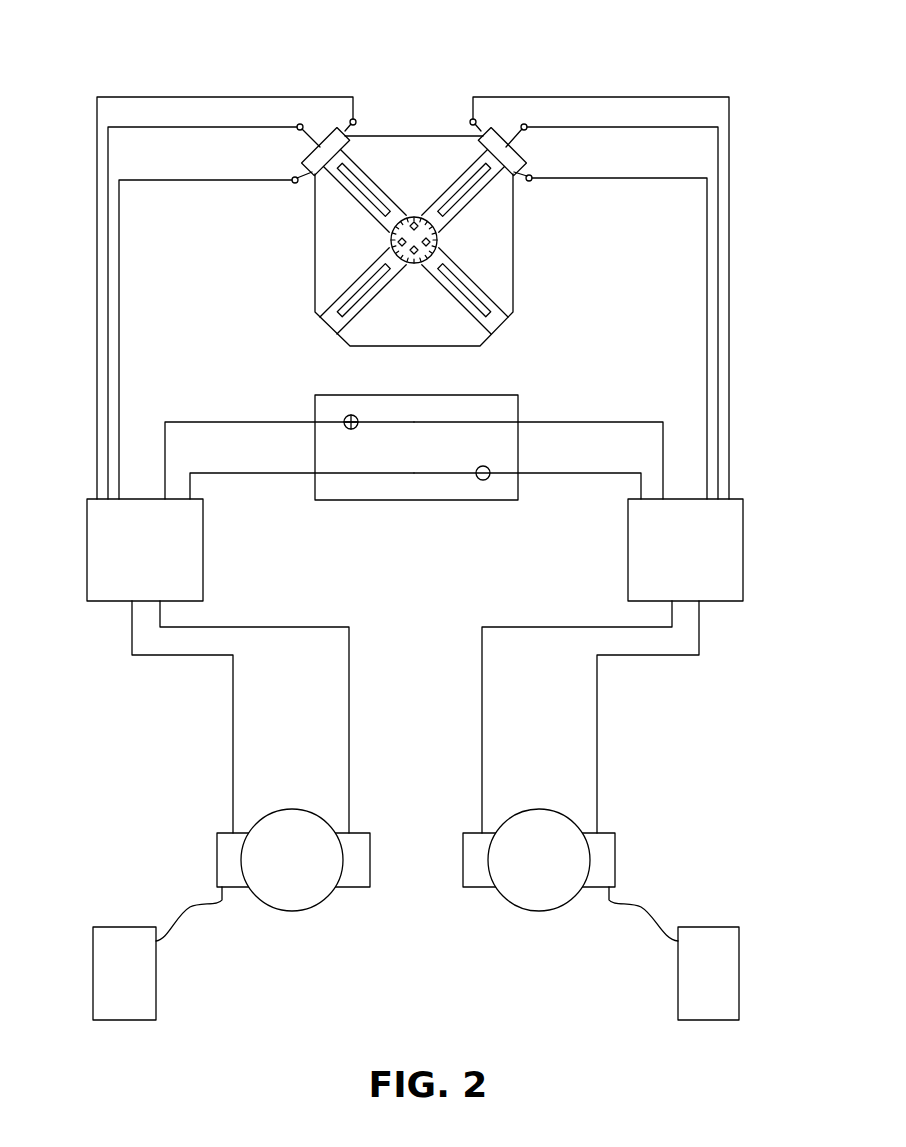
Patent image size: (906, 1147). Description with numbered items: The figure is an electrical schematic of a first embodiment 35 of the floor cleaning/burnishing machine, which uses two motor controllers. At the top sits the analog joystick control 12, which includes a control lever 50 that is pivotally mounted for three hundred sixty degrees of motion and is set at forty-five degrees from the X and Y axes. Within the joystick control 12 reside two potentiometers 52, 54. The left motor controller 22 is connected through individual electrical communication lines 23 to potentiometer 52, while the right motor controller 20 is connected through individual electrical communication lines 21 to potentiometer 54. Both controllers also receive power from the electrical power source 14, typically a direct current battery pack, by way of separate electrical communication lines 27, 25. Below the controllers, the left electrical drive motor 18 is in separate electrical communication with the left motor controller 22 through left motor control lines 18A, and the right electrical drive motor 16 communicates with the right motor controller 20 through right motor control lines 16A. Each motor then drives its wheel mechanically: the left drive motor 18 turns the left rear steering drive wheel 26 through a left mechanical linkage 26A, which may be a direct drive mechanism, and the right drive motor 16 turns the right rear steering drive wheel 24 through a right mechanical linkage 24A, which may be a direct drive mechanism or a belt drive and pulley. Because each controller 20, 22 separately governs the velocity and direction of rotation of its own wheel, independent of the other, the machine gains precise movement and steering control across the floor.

The first embodiment 35 is at (462, 69).
The analog joystick control 12 is at (513, 282).
The control lever 50 is at (437, 238).
The potentiometer 52 is at (310, 150).
The potentiometer 54 is at (525, 150).
The electrical communication lines 23 is at (97, 347).
The electrical communication lines 21 is at (729, 347).
The electrical communication lines 27 is at (225, 472).
The electrical communication lines 25 is at (608, 472).
The electrical power source 14 is at (415, 500).
The left motor controller 22 is at (203, 548).
The right motor controller 20 is at (628, 548).
The left motor control lines 18A is at (132, 637).
The right motor control lines 16A is at (699, 637).
The left electrical drive motor 18 is at (292, 911).
The right electrical drive motor 16 is at (539, 911).
The left rear steering drive wheel 26 is at (122, 927).
The right rear steering drive wheel 24 is at (707, 927).
The left mechanical linkage 26A is at (190, 908).
The right mechanical linkage 24A is at (641, 910).